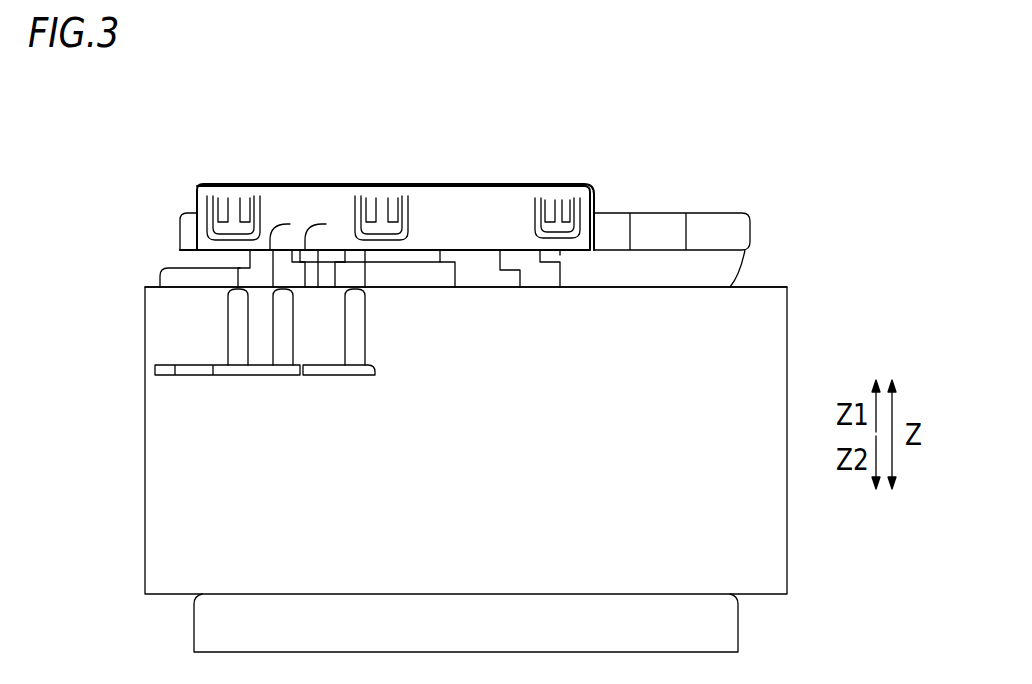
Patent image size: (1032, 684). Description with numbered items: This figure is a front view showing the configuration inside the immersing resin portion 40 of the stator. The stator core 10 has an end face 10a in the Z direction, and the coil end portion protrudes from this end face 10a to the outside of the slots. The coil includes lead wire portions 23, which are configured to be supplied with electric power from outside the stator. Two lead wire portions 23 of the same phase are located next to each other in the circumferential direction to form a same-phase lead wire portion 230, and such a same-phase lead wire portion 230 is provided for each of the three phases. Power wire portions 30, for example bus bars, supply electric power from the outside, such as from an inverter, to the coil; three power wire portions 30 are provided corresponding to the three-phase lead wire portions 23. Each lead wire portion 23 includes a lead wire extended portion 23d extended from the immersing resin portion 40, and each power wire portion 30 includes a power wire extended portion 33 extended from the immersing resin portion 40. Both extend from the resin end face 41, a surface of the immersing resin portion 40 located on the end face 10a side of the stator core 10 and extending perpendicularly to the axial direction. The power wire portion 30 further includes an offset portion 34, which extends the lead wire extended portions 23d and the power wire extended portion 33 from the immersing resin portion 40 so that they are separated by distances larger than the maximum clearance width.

The stator core 10 is at (172, 540).
The end face 10a is at (163, 288).
The lead wire portion 23 is at (215, 195).
The same-phase lead wire portion 230 is at (308, 84).
The lead wire extended portion 23d is at (175, 268).
The power wire portion 30 is at (183, 215).
The power wire extended portion 33 is at (243, 278).
The offset portion 34 is at (282, 226).
The immersing resin portion 40 is at (551, 196).
The resin end face 41 is at (590, 262).